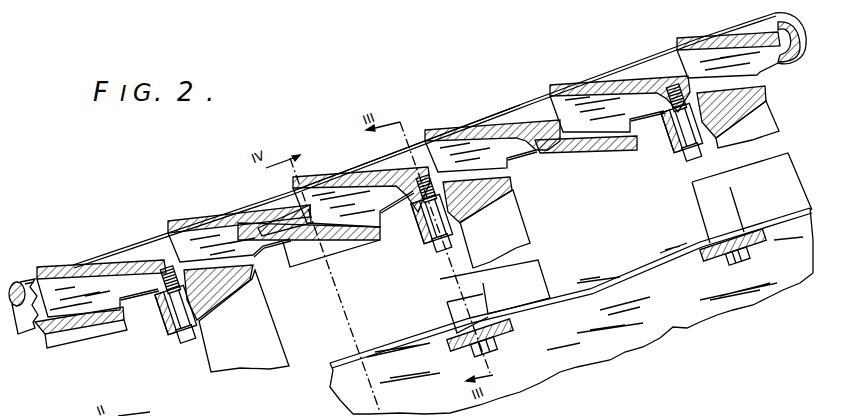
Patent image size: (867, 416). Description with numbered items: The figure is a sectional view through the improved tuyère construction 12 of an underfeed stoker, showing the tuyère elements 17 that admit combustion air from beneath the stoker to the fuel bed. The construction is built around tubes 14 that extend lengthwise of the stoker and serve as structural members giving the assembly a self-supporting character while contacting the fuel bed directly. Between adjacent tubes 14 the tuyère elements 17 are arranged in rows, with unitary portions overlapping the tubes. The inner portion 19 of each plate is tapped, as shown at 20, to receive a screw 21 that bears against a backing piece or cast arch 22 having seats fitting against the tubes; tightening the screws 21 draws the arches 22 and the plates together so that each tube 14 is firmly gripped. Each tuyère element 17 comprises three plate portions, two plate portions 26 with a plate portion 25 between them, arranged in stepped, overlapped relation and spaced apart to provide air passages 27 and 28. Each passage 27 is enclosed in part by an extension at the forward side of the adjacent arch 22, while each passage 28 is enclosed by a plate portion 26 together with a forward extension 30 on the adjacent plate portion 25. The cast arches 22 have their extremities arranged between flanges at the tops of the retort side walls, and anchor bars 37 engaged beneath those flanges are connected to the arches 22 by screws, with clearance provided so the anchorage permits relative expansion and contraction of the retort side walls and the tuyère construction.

The tuyère construction 12 is at (571, 312).
The tube 14 is at (30, 284).
The tuyère element 17 is at (439, 140).
The inner portion 19 is at (423, 189).
The tapped hole 20 is at (393, 226).
The screw 21 is at (422, 254).
The backing piece or cast arch 22 is at (429, 218).
The plate portion 25 is at (364, 178).
The plate portion 26 is at (408, 202).
The air passage 27 is at (406, 144).
The air passage 28 is at (681, 149).
The forward extension 30 is at (336, 242).
The anchor bar 37 is at (608, 296).